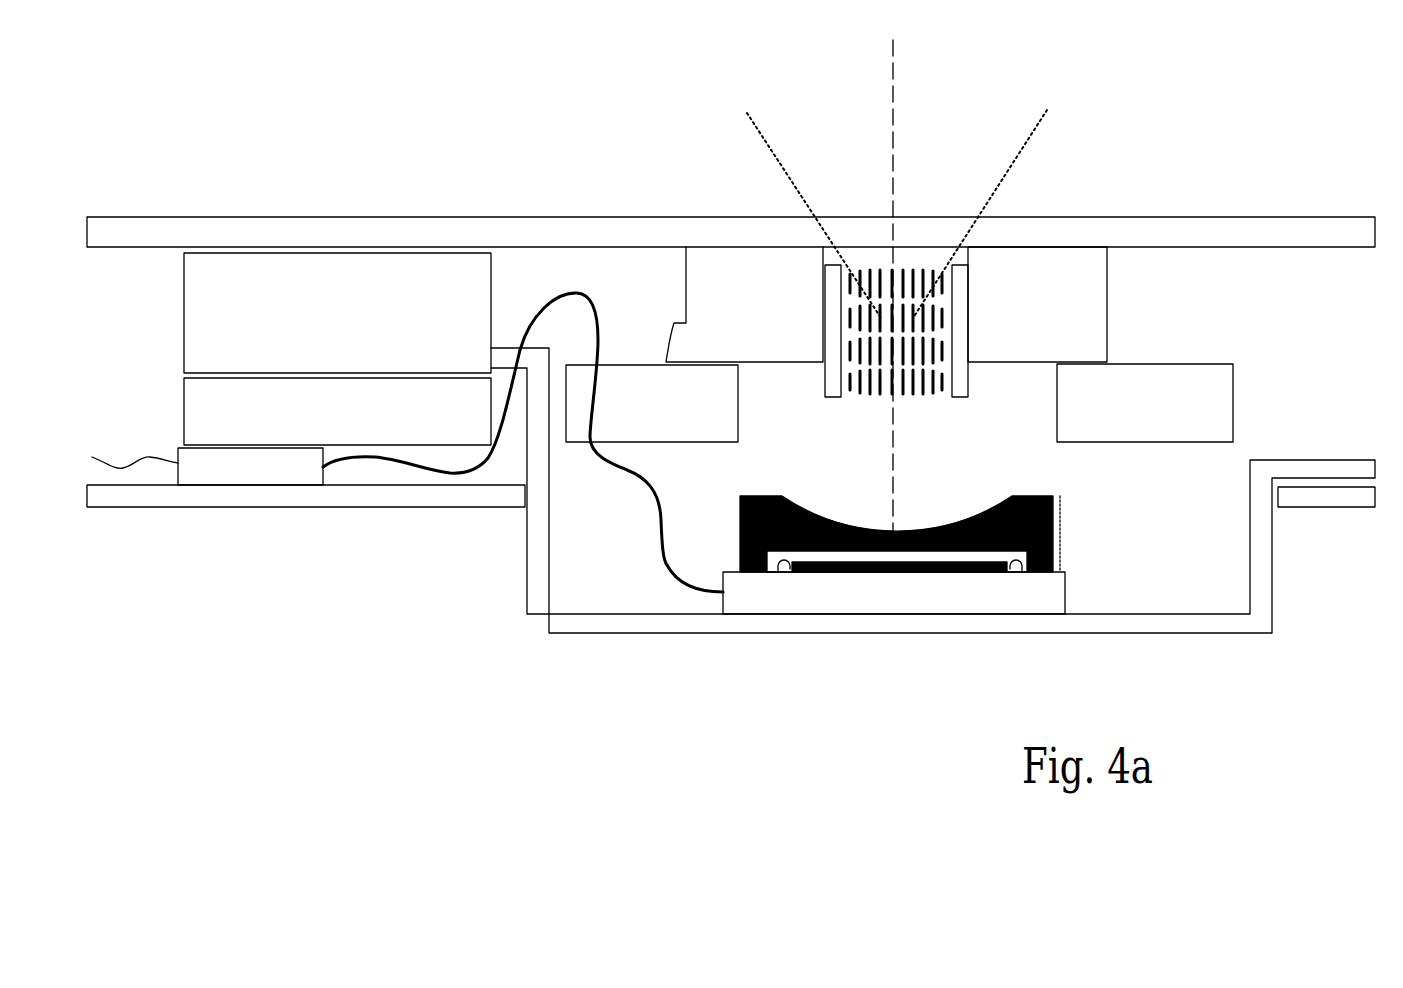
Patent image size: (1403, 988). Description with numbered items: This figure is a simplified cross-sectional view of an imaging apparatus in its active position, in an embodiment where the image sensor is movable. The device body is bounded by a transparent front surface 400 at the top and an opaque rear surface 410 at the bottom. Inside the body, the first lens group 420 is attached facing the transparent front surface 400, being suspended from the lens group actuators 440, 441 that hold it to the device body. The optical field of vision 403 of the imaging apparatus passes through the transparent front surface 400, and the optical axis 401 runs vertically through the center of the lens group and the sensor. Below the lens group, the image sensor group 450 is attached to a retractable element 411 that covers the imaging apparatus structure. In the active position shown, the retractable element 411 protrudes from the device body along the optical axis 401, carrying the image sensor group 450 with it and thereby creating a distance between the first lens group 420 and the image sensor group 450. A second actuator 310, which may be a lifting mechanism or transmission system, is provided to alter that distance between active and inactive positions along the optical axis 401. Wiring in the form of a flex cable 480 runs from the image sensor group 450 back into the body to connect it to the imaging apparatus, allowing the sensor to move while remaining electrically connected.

The second actuator 310 is at (283, 278).
The transparent front surface 400 is at (388, 223).
The optical axis 401 is at (893, 100).
The optical field of vision 403 is at (1004, 177).
The opaque rear surface 410 is at (270, 490).
The retractable element 411 is at (697, 623).
The first lens group 420 is at (880, 277).
The lens group actuator 440 is at (707, 278).
The lens group actuator 441 is at (660, 410).
The image sensor group 450 is at (893, 570).
The flex cable 480 is at (435, 473).